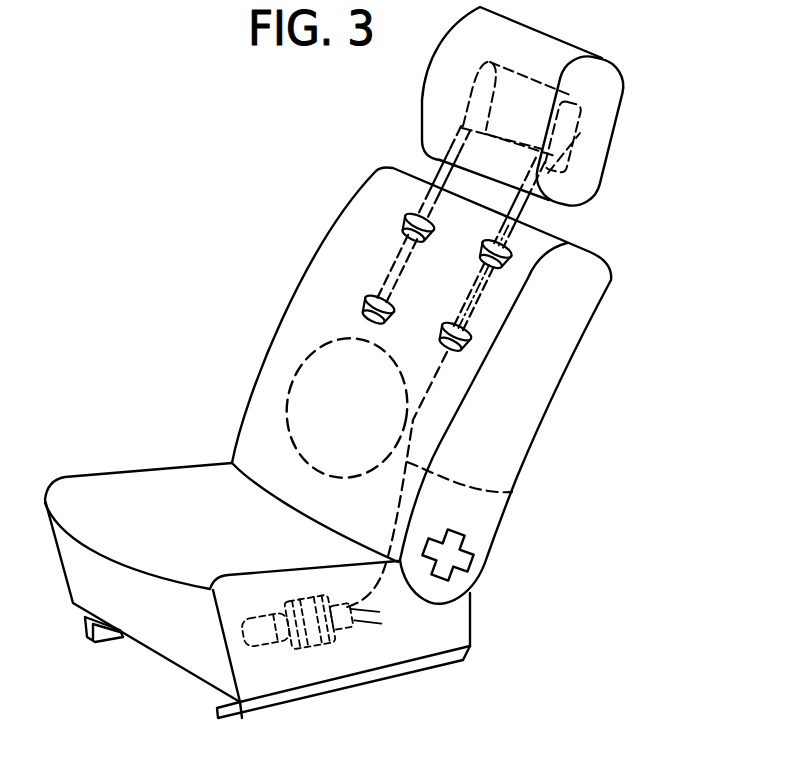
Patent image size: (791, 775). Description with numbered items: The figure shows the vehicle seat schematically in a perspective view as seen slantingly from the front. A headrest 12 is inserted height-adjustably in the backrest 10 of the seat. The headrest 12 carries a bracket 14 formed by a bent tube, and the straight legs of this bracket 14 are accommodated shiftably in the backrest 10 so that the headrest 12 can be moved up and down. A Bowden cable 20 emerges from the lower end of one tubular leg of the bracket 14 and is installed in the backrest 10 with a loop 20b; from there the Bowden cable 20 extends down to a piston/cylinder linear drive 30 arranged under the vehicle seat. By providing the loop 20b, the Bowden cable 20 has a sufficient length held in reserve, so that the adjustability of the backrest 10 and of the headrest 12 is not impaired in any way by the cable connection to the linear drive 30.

The backrest 10 is at (543, 332).
The headrest 12 is at (615, 56).
The bracket 14 is at (440, 170).
The Bowden cable 20 is at (512, 493).
The loop 20b is at (309, 353).
The piston/cylinder linear drive 30 is at (289, 633).